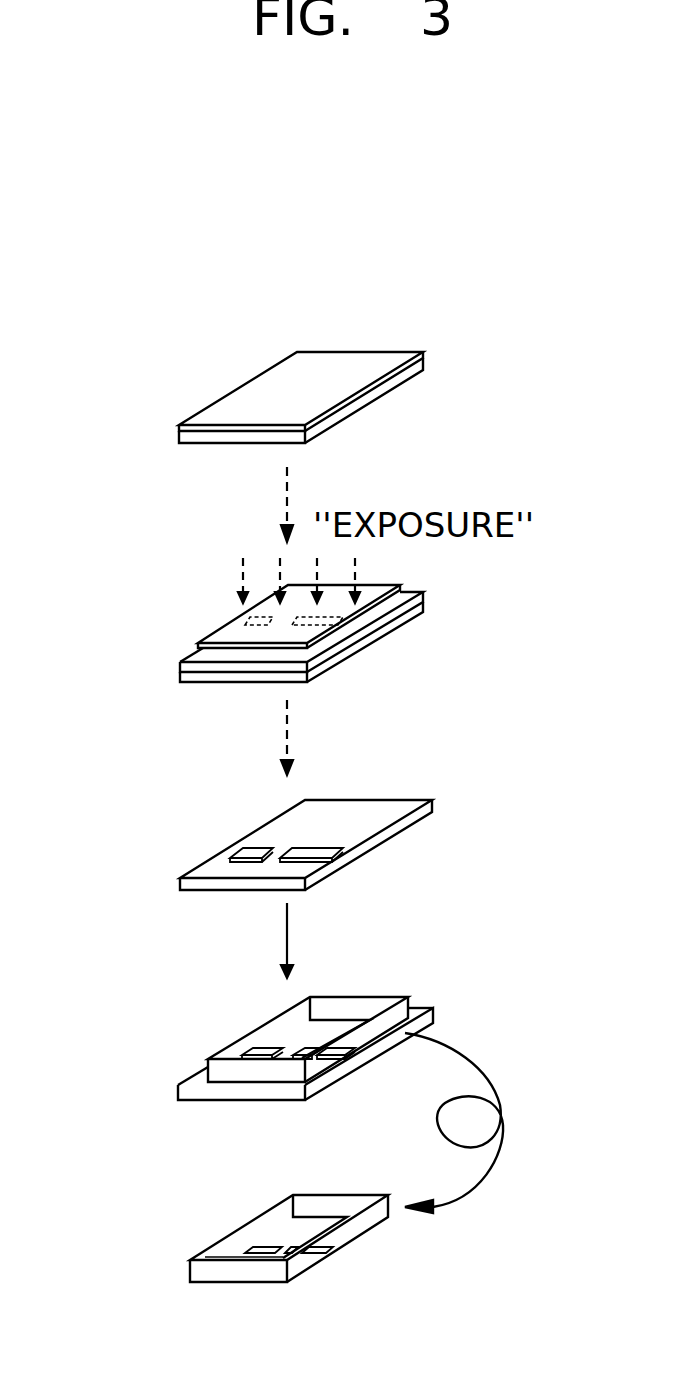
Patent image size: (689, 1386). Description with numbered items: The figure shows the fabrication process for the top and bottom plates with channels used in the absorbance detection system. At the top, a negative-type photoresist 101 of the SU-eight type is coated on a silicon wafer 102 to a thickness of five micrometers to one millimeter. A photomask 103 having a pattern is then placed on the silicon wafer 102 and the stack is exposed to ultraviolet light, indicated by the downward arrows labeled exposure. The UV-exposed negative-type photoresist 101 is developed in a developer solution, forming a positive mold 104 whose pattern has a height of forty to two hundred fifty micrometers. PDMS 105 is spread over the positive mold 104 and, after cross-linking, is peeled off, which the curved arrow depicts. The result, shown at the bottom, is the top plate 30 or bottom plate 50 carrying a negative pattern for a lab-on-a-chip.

The negative-type photoresist 101 is at (228, 400).
The silicon wafer 102 is at (352, 413).
The photomask 103 is at (223, 637).
The positive mold 104 is at (400, 808).
The PDMS 105 is at (383, 1002).
The top plate 30 is at (367, 1256).
The bottom plate 50 is at (308, 1260).